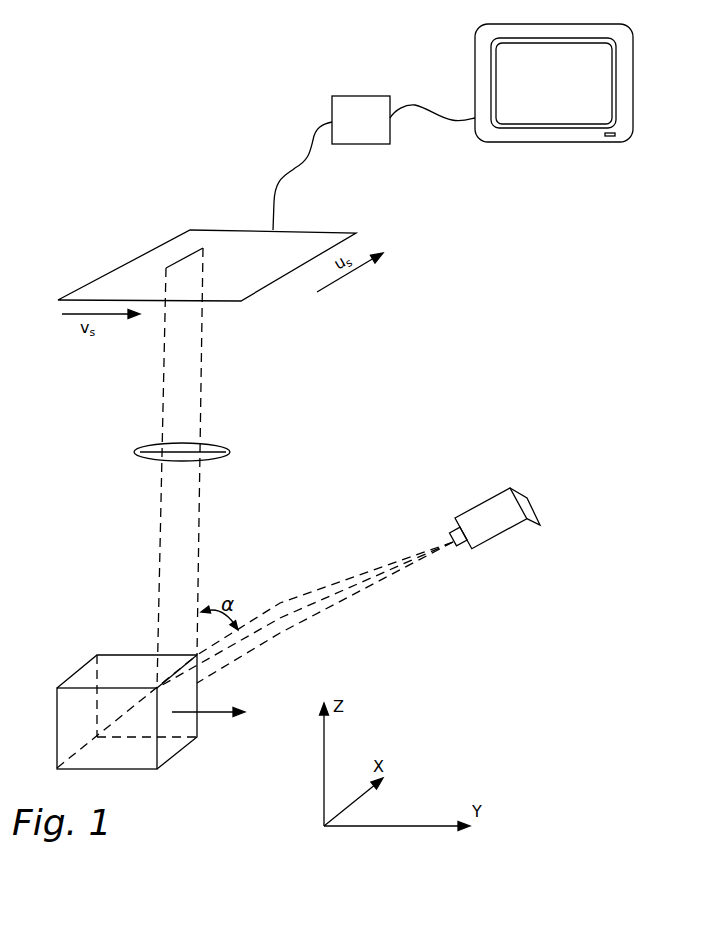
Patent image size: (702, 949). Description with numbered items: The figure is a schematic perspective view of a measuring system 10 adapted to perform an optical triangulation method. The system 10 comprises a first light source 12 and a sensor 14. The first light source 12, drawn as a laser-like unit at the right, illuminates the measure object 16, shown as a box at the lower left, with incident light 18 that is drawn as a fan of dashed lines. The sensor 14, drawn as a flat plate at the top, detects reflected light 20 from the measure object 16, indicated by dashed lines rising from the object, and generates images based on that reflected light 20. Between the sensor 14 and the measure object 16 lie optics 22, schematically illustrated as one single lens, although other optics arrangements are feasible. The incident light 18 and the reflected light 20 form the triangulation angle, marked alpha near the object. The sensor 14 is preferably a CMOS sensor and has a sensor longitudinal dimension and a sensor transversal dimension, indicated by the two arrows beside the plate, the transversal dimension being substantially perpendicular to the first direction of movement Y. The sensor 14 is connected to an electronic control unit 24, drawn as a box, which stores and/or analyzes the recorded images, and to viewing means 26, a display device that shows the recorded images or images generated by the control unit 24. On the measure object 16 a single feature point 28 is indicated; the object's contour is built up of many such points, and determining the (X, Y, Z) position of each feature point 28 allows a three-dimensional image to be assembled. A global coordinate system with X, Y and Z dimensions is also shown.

The measuring system 10 is at (79, 108).
The first light source 12 is at (483, 515).
The sensor 14 is at (190, 230).
The measure object 16 is at (174, 733).
The incident light 18 is at (339, 615).
The reflected light 20 is at (217, 362).
The optics 22 is at (148, 450).
The electronic control unit 24 is at (374, 163).
The viewing means 26 is at (554, 83).
The feature point 28 is at (197, 655).